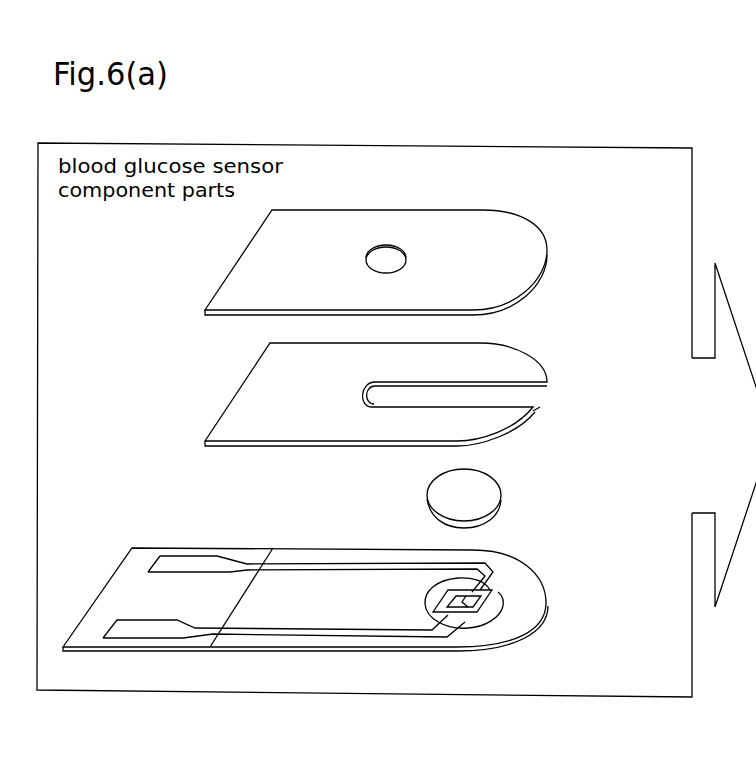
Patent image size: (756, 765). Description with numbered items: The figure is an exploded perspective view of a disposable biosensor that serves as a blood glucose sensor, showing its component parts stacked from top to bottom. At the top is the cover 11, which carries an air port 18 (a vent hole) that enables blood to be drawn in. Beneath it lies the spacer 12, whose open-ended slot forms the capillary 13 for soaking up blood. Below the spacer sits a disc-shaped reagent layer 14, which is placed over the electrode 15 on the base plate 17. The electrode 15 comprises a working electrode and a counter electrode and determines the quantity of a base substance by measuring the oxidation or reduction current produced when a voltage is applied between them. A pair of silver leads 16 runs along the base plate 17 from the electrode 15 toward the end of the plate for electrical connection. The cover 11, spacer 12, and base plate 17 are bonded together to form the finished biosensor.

The cover 11 is at (525, 238).
The spacer 12 is at (503, 360).
The capillary 13 is at (525, 397).
The reagent layer 14 is at (492, 487).
The electrode 15 is at (497, 588).
The silver lead 16 is at (138, 630).
The base plate 17 is at (530, 639).
The air port 18 is at (386, 256).